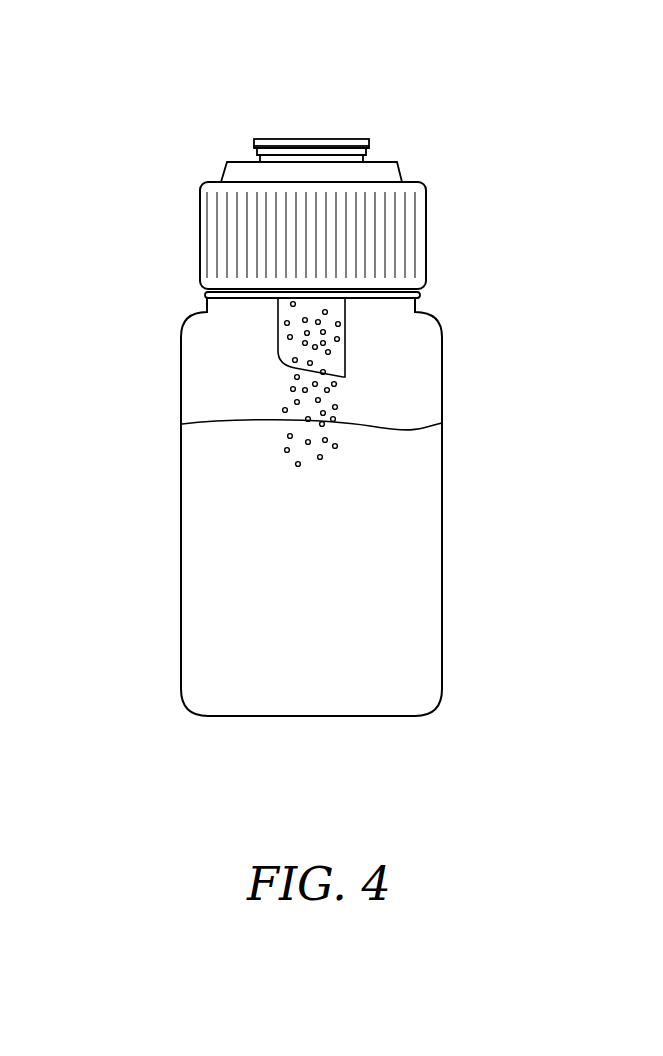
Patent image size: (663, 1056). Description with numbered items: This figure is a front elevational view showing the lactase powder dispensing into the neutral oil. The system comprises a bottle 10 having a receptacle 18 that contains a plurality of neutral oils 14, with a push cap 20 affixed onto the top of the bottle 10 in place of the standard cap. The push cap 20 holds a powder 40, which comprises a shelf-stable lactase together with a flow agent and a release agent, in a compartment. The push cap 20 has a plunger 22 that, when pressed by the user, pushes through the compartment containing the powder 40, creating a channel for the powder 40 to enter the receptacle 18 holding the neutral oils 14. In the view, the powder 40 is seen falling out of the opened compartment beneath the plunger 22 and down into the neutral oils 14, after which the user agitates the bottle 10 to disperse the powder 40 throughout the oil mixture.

The bottle 10 is at (158, 88).
The neutral oils 14 is at (423, 483).
The receptacle 18 is at (442, 393).
The push cap 20 is at (407, 198).
The plunger 22 is at (346, 330).
The powder 40 is at (337, 385).